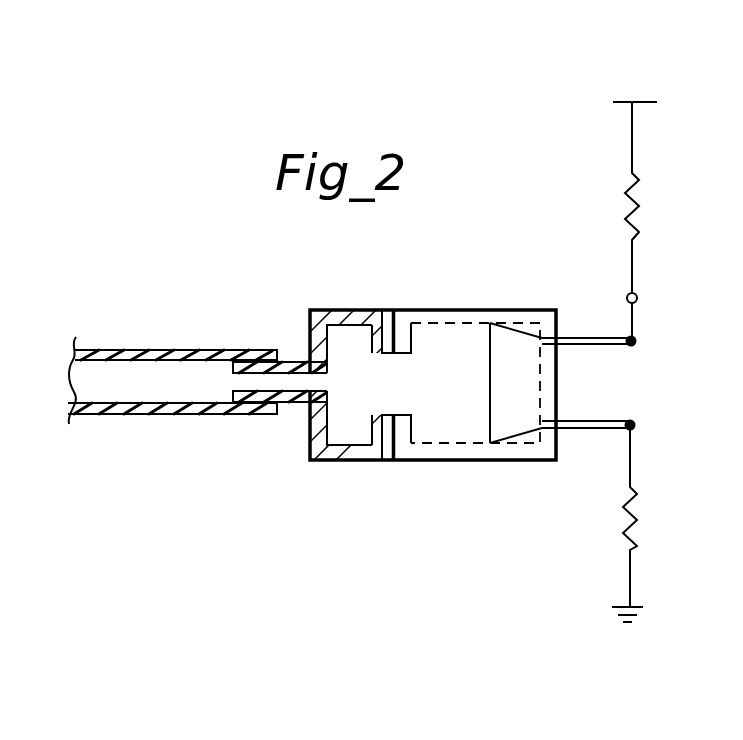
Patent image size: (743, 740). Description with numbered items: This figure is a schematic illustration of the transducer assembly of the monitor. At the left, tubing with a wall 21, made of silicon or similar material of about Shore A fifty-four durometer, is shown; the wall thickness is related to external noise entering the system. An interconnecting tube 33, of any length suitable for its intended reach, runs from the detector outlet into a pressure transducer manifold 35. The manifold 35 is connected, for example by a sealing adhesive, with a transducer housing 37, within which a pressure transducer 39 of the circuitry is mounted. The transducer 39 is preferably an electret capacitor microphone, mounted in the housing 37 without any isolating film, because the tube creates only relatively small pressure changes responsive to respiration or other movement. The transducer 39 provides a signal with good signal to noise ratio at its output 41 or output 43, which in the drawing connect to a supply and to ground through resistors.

The wall 21 is at (164, 312).
The interconnecting tube 33 is at (192, 350).
The pressure transducer manifold 35 is at (367, 308).
The transducer housing 37 is at (488, 323).
The pressure transducer 39 is at (518, 360).
The output 41 is at (637, 298).
The output 43 is at (634, 424).